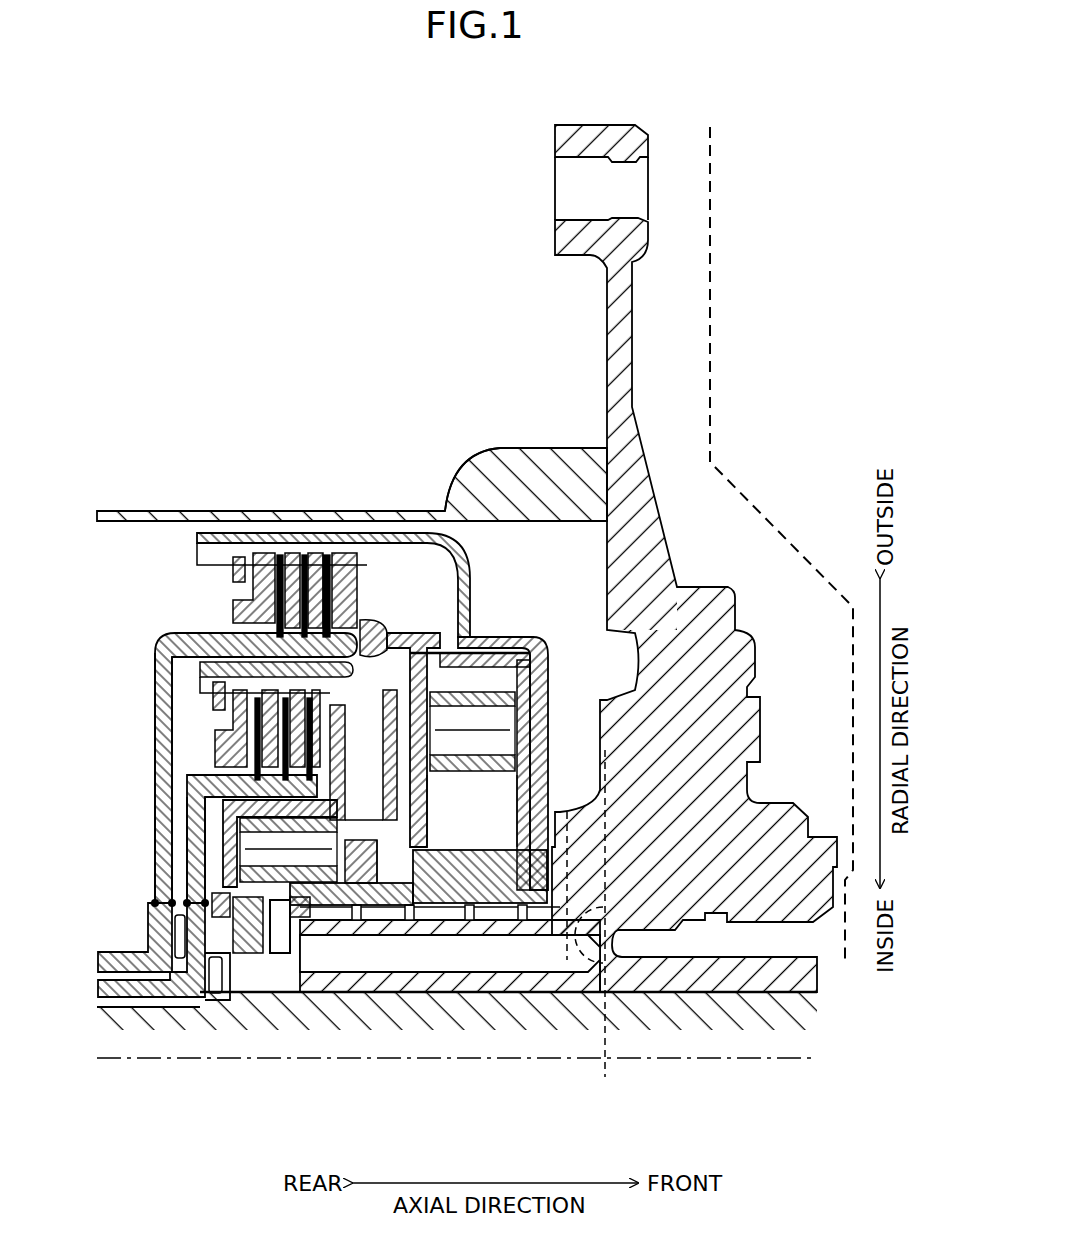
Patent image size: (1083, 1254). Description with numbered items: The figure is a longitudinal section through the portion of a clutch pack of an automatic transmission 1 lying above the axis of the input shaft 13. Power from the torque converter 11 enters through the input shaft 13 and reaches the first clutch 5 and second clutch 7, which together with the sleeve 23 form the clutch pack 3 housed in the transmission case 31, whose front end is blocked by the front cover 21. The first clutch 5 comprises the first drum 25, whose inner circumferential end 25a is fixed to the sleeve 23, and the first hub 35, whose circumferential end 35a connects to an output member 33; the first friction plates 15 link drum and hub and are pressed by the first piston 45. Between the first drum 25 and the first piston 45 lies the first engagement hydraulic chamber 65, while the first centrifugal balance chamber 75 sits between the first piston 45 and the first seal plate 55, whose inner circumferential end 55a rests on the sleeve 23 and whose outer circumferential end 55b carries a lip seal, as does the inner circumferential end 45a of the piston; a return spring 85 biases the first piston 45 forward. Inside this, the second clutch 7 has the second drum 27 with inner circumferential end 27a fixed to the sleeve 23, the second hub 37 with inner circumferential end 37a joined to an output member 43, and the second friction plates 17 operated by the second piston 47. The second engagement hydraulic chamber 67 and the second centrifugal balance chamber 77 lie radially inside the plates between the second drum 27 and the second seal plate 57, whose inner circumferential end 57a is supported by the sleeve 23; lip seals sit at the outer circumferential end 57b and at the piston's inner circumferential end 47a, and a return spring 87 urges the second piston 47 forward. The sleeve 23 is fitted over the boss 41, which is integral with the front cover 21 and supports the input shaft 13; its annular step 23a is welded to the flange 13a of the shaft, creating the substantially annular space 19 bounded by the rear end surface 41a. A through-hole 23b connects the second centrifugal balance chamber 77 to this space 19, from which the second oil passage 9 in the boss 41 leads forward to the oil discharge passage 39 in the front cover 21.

The automatic transmission 1 is at (305, 272).
The clutch pack 3 is at (118, 717).
The first clutch 5 is at (493, 638).
The second clutch 7 is at (150, 708).
The second oil passage 9 is at (562, 950).
The torque converter 11 is at (708, 143).
The input shaft 13 is at (733, 1018).
The flange 13a is at (222, 940).
The first friction plates 15 is at (250, 595).
The second friction plates 17 is at (210, 725).
The substantially annular space 19 is at (307, 970).
The front cover 21 is at (760, 723).
The sleeve 23 is at (505, 860).
The annular step 23a is at (260, 950).
The through-hole 23b is at (282, 975).
The first drum 25 is at (300, 533).
The inner circumferential end 25a is at (527, 920).
The second drum 27 is at (200, 667).
The inner circumferential end 27a is at (425, 880).
The transmission case 31 is at (528, 456).
The output member 33 is at (170, 965).
The first hub 35 is at (190, 795).
The circumferential end 35a is at (158, 906).
The second hub 37 is at (190, 852).
The inner circumferential end 37a is at (178, 958).
The oil discharge passage 39 is at (595, 926).
The boss 41 is at (390, 990).
The rear end surface 41a is at (328, 930).
The output member 43 is at (115, 998).
The first piston 45 is at (440, 620).
The inner circumferential end 45a is at (490, 885).
The second piston 47 is at (368, 690).
The inner circumferential end 47a is at (347, 940).
The first seal plate 55 is at (500, 652).
The inner circumferential end 55a is at (450, 930).
The outer circumferential end 55b is at (405, 625).
The second seal plate 57 is at (230, 823).
The inner circumferential end 57a is at (235, 960).
The outer circumferential end 57b is at (350, 705).
The first engagement hydraulic chamber 65 is at (520, 819).
The second engagement hydraulic chamber 67 is at (389, 869).
The first centrifugal balance chamber 75 is at (464, 819).
The second centrifugal balance chamber 77 is at (382, 762).
The return spring 85 is at (482, 703).
The return spring 87 is at (270, 872).